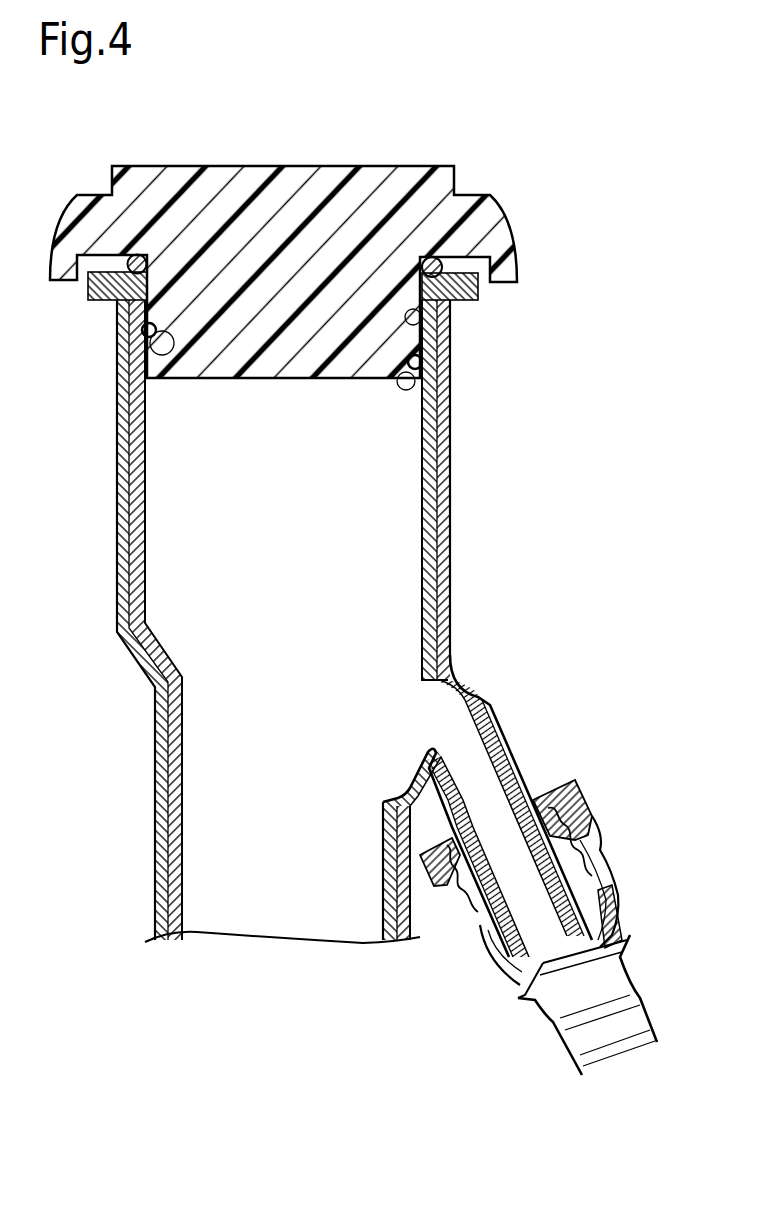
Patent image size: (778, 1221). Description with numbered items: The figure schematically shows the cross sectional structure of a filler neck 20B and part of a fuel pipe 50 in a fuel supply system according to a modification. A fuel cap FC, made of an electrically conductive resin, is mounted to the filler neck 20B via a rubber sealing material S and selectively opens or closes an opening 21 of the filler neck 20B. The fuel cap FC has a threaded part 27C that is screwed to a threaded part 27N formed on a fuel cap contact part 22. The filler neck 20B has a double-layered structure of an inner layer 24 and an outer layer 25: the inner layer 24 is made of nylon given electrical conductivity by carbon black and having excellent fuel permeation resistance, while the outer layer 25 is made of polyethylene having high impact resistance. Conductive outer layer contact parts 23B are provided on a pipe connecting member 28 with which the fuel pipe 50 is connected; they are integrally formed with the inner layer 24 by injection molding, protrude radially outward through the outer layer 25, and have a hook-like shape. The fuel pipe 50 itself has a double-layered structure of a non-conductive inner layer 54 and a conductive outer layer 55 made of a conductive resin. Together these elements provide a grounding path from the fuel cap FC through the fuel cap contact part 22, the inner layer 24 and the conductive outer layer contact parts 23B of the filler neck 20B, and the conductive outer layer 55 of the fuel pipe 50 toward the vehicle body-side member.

The fuel cap FC is at (283, 165).
The sealing material S is at (82, 262).
The filler neck 20B is at (596, 382).
The opening 21 is at (447, 313).
The fuel cap contact part 22 is at (311, 628).
The inner layer 24 is at (118, 542).
The outer layer 25 is at (130, 513).
The threaded part 27N is at (148, 330).
The threaded part 27C is at (158, 346).
The conductive outer layer contact part 23B is at (580, 797).
The pipe connecting member 28 is at (590, 848).
The fuel pipe 50 is at (672, 833).
The inner layer 54 is at (612, 884).
The outer layer 55 is at (618, 922).